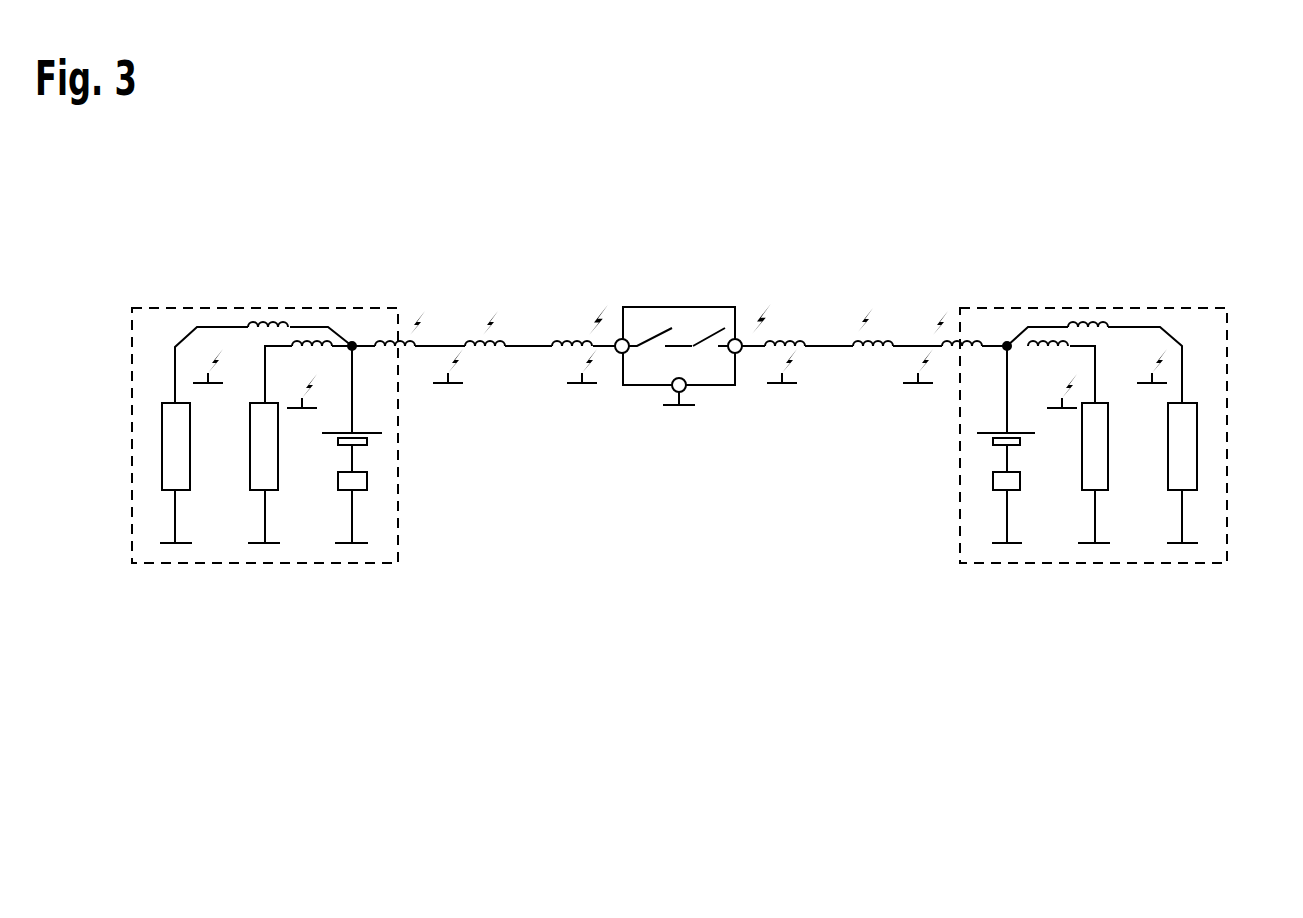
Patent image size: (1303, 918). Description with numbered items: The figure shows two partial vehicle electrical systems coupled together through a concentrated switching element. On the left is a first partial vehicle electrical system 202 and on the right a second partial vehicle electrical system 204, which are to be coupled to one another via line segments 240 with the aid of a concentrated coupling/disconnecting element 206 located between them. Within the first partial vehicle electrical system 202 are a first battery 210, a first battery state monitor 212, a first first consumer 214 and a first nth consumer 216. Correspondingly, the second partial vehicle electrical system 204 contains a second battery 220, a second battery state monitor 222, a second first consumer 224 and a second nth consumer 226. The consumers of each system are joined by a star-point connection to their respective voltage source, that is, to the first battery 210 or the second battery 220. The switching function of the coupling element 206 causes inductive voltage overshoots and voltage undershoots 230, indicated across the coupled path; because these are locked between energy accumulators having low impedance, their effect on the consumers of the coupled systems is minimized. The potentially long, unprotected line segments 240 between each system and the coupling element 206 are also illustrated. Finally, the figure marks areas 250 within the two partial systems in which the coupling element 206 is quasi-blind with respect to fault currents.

The first partial vehicle electrical system 202 is at (296, 563).
The second partial vehicle electrical system 204 is at (1135, 563).
The concentrated coupling/disconnecting element 206 is at (680, 307).
The first battery 210 is at (382, 440).
The first battery state monitor 212 is at (367, 481).
The first first consumer 214 is at (162, 443).
The first nth consumer 216 is at (250, 475).
The second battery 220 is at (992, 443).
The second battery state monitor 222 is at (992, 480).
The second first consumer 224 is at (1082, 475).
The second nth consumer 226 is at (1197, 428).
The inductive voltage overshoots and voltage undershoots 230 is at (370, 296).
The line segments 240 is at (605, 398).
The areas 250 is at (340, 296).